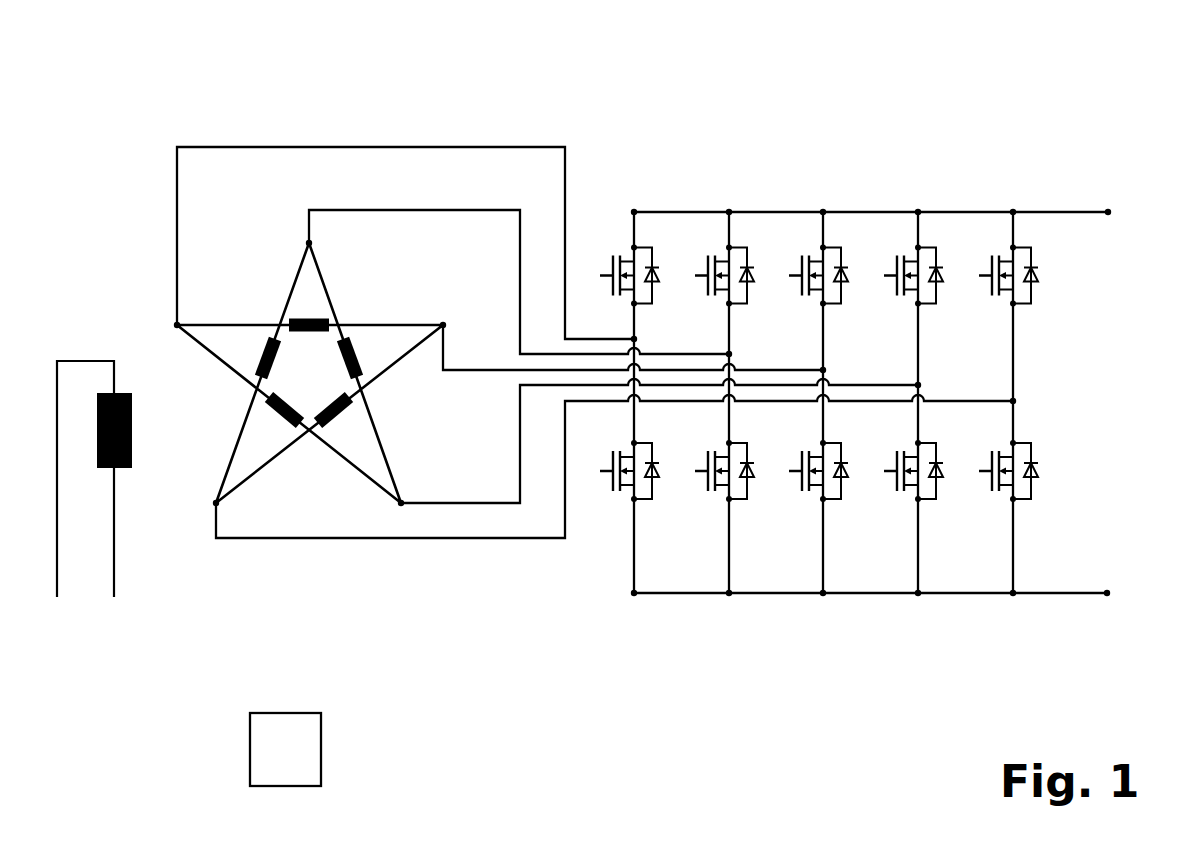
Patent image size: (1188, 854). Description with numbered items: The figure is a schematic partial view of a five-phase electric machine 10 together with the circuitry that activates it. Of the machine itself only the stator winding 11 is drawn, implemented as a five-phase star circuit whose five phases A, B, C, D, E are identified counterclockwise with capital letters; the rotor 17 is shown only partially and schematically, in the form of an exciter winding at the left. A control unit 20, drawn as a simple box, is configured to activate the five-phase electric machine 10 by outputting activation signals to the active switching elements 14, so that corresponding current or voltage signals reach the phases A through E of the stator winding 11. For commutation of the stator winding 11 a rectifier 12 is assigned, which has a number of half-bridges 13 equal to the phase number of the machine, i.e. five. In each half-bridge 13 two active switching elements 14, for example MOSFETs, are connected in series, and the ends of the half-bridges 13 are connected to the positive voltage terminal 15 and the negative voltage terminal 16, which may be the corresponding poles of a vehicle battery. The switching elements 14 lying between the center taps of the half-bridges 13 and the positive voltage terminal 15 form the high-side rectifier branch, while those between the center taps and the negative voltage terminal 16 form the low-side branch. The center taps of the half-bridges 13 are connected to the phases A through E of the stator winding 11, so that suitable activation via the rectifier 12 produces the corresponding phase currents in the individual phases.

The five-phase electric machine 10 is at (596, 397).
The stator winding 11 is at (309, 577).
The rectifier 12 is at (885, 428).
The half-bridge 13 is at (865, 359).
The active switching element 14 is at (850, 399).
The positive voltage terminal 15 is at (1108, 212).
The negative voltage terminal 16 is at (1107, 593).
The rotor 17 is at (84, 318).
The control unit 20 is at (321, 748).
The phase A is at (584, 338).
The phase B is at (453, 145).
The phase C is at (471, 541).
The phase D is at (596, 401).
The phase E is at (487, 353).